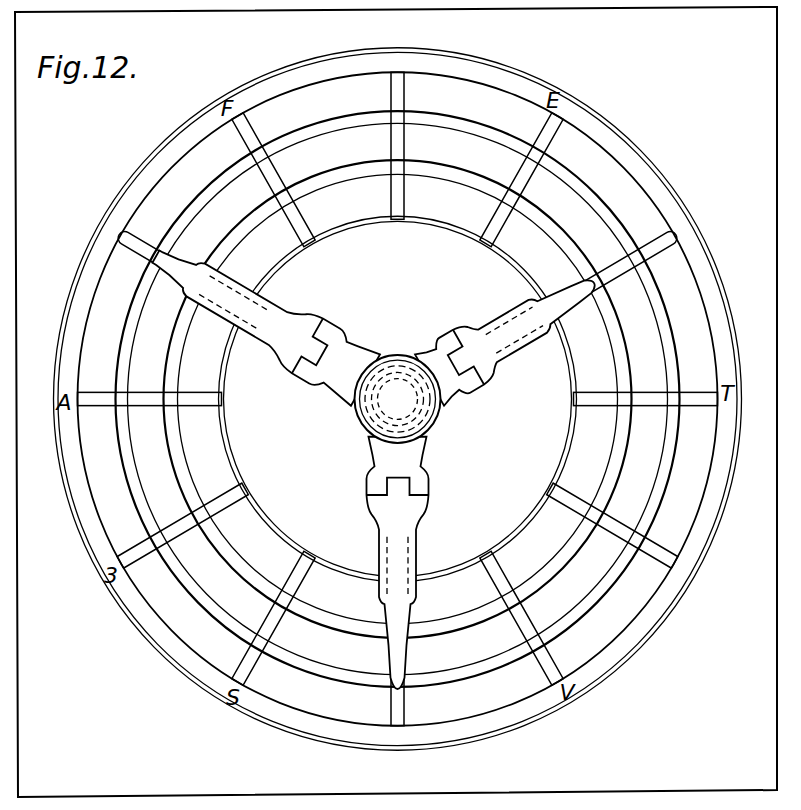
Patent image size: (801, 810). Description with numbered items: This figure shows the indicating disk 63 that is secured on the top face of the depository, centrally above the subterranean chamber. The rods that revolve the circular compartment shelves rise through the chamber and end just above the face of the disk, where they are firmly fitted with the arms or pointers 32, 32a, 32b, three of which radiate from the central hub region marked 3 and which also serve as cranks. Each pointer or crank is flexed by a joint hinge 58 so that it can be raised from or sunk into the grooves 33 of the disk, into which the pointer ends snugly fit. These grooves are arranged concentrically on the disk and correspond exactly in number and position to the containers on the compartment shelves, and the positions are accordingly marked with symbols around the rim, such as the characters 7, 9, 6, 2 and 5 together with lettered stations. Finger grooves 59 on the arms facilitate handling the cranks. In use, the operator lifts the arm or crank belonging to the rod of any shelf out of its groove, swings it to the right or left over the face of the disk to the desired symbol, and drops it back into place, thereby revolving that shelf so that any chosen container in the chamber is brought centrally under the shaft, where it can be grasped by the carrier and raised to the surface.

The hub / shaft 3 is at (398, 399).
The arm or pointer 32 is at (486, 355).
The arm or pointer 32a is at (281, 347).
The arm or pointer 32b is at (415, 549).
The grooves 33 is at (463, 233).
The joint hinge 58 is at (473, 376).
The finger grooves 59 is at (509, 317).
The indicating disk 63 is at (398, 398).
The dial spoke 7 is at (395, 135).
The dial spoke 9 is at (618, 264).
The dial spoke 6 is at (619, 531).
The dial spoke 2 is at (399, 667).
The dial spoke 5 is at (173, 270).